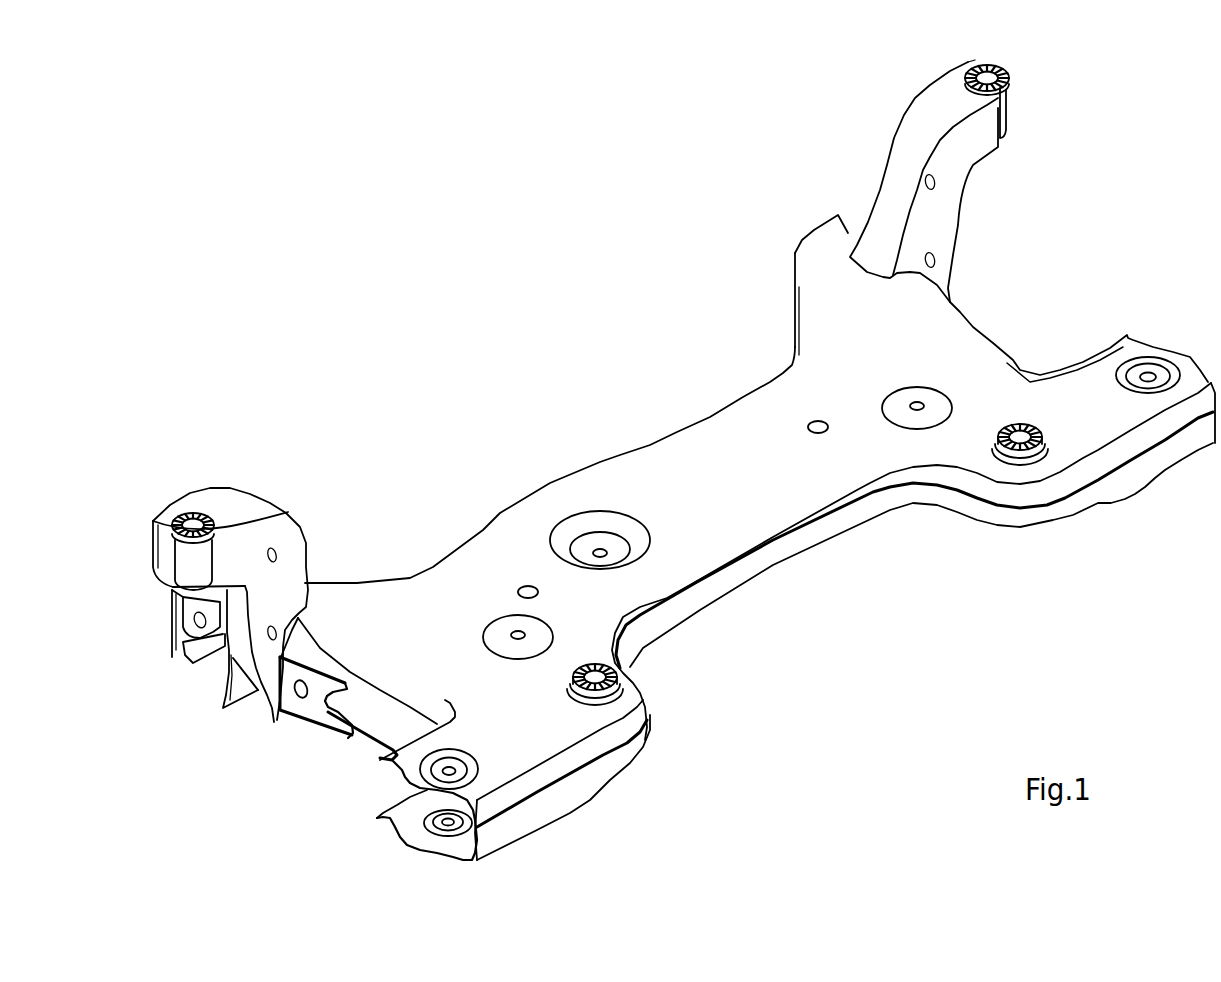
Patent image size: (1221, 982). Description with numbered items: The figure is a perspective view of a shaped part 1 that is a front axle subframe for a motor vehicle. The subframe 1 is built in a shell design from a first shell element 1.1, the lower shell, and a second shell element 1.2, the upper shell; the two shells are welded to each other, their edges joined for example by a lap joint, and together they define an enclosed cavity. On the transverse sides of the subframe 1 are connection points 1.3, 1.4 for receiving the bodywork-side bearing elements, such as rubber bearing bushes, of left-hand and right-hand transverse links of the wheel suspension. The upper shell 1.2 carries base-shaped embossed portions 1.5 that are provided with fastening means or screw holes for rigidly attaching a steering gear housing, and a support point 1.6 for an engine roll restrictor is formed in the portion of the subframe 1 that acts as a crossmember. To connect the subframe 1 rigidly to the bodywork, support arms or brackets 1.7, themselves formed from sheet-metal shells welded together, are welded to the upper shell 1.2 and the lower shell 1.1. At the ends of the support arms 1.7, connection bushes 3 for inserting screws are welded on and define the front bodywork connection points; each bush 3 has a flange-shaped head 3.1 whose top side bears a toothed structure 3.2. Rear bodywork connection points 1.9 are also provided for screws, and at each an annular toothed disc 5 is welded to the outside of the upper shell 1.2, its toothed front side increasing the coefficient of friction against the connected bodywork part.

The shaped part / front axle subframe 1 is at (656, 458).
The first shell element (lower shell) 1.1 is at (740, 580).
The second shell element (upper shell) 1.2 is at (747, 517).
The connection point 1.3 is at (837, 232).
The connection point 1.4 is at (1148, 373).
The base-shaped embossed portion 1.5 is at (500, 628).
The support point for an engine roll restrictor 1.6 is at (583, 545).
The support arm (bracket) 1.7 is at (898, 135).
The rear bodywork connection point 1.9 is at (647, 698).
The connection bush (connection sleeve) 3 is at (1007, 117).
The flange-shaped head 3.1 is at (1008, 88).
The toothed structure (toothing) 3.2 is at (1003, 74).
The annular toothed disc 5 is at (610, 683).